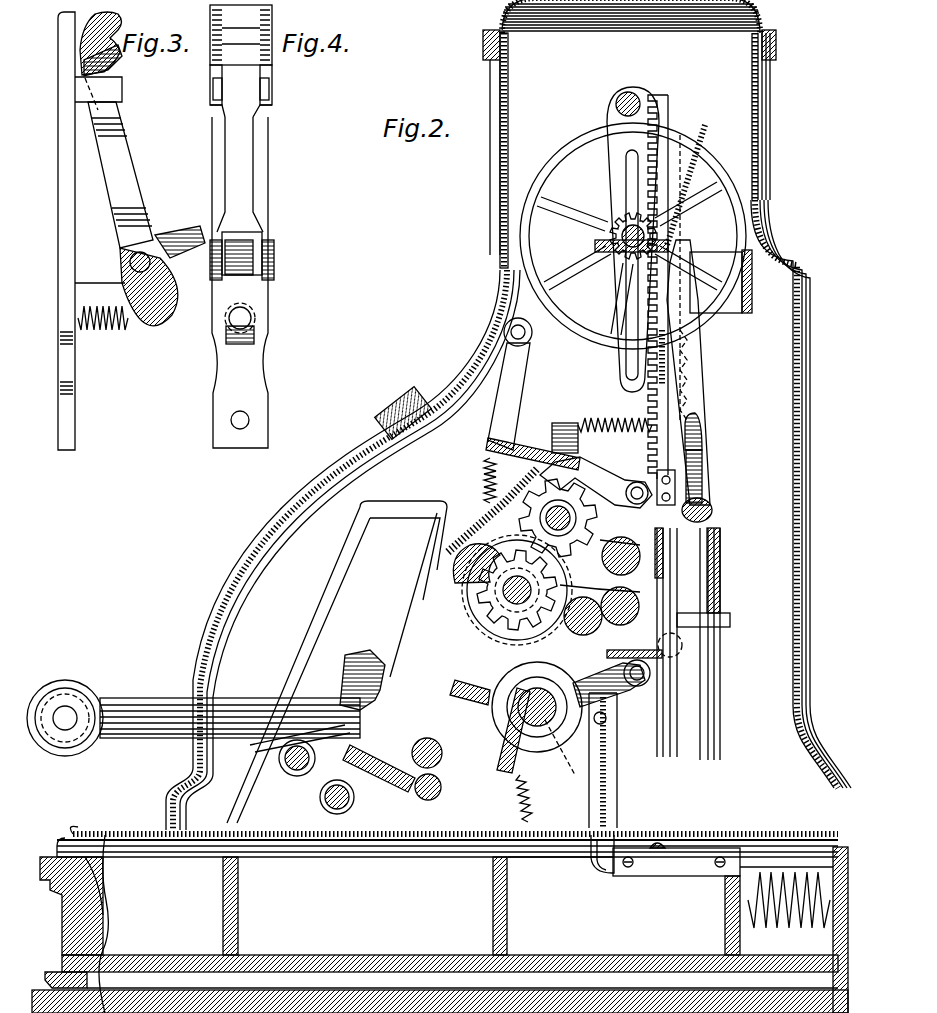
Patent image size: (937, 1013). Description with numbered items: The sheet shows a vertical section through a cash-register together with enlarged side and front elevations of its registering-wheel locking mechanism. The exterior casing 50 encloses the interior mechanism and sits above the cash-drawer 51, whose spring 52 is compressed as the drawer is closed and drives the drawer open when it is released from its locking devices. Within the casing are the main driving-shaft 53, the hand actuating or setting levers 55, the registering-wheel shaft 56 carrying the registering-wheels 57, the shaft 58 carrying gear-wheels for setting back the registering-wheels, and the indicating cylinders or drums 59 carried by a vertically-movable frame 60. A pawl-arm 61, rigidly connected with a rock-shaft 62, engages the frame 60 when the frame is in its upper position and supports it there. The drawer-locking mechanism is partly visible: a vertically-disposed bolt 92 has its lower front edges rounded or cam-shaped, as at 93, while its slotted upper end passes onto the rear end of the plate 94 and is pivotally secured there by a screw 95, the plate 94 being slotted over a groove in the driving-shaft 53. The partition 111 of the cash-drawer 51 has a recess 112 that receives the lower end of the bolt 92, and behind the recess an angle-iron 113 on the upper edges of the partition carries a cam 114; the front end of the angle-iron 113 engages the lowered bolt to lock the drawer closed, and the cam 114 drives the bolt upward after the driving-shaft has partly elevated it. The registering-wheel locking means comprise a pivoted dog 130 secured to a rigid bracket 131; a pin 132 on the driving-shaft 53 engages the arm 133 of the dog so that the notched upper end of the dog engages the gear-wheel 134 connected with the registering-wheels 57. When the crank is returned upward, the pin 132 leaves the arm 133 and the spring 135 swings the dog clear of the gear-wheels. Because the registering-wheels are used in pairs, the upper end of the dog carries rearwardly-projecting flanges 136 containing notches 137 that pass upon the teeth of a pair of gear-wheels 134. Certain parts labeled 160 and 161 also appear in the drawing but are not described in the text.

In FIG. 2, the exterior casing 50 is at (508, 415).
In FIG. 2, the cash-drawer 51 is at (440, 919).
In FIG. 2, the spring 52 is at (786, 888).
In FIG. 2, the main driving-shaft 53 is at (540, 700).
In FIG. 2, the hand actuating or setting levers 55 is at (241, 698).
In FIG. 2, the registering-wheel shaft 56 is at (517, 545).
In FIG. 2, the registering-wheels 57 is at (505, 545).
In FIG. 2, the shaft carrying gear-wheels for setting back the registering-wheels 58 is at (592, 516).
In FIG. 2, the indicating cylinders or drums 59 is at (573, 146).
In FIG. 2, the vertically-movable frame 60 is at (595, 250).
In FIG. 2, the pawl-arm 61 is at (692, 390).
In FIG. 2, the rock-shaft 62 is at (713, 508).
In FIG. 2, the bolt 92 is at (612, 788).
In FIG. 2, the rounded or cam-shaped front edges 93 is at (595, 868).
In FIG. 2, the plate 94 is at (574, 740).
In FIG. 2, the screw 95 is at (607, 718).
In FIG. 2, the partition 111 is at (527, 850).
In FIG. 2, the recess 112 is at (606, 875).
In FIG. 2, the angle-iron 113 is at (676, 862).
In FIG. 2, the cam 114 is at (660, 840).
In FIG. 3, the pivoted dog 130 is at (133, 168).
In FIG. 4, the pivoted dog 130 is at (240, 164).
In FIG. 2, the pivoted dog 130 is at (433, 647).
In FIG. 3, the rigid bracket 131 is at (91, 231).
In FIG. 4, the rigid bracket 131 is at (263, 378).
In FIG. 2, the rigid bracket 131 is at (423, 597).
In FIG. 2, the pin 132 is at (470, 686).
In FIG. 3, the arm 133 is at (182, 234).
In FIG. 4, the arm 133 is at (248, 232).
In FIG. 2, the arm 133 is at (374, 776).
In FIG. 2, the gear-wheel 134 is at (420, 623).
In FIG. 3, the spring 135 is at (105, 330).
In FIG. 4, the spring 135 is at (252, 315).
In FIG. 3, the rearwardly-projecting flanges 136 is at (113, 52).
In FIG. 4, the rearwardly-projecting flanges 136 is at (210, 66).
In FIG. 3, the notches 137 is at (118, 24).
In FIG. 4, the notches 137 is at (272, 30).
In FIG. 2, the notches 137 is at (450, 560).
In FIG. 2, the rod 160 is at (698, 401).
In FIG. 2, the block 161 is at (705, 460).